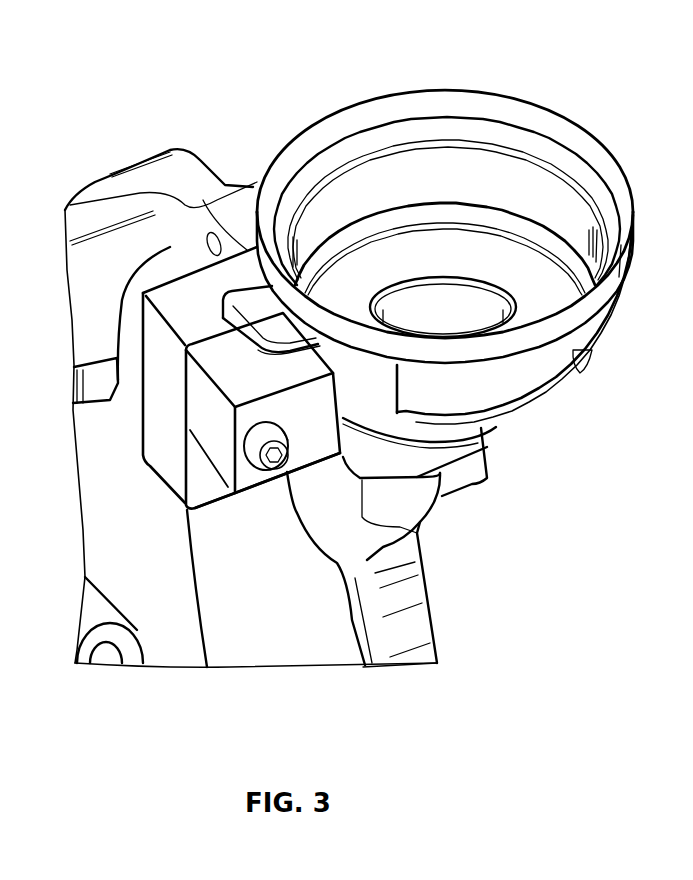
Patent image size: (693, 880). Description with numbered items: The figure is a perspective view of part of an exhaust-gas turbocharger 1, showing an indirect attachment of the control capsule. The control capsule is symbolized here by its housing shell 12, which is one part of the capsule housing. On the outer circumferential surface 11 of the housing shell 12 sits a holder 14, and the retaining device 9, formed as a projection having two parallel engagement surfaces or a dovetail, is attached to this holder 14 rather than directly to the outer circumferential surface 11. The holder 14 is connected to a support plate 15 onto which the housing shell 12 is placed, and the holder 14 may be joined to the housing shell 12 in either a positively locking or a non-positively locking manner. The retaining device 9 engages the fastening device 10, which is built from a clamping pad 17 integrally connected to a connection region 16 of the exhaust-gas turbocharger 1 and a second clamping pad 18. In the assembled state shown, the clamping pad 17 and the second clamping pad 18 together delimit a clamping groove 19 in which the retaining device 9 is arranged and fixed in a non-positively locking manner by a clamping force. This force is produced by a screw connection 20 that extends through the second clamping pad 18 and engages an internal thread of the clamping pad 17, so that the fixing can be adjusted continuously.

The exhaust-gas turbocharger 1 is at (203, 126).
The retaining device 9 is at (250, 288).
The fastening device 10 is at (272, 484).
The outer circumferential surface 11 is at (580, 373).
The housing shell 12 is at (609, 150).
The holder 14 is at (373, 400).
The support plate 15 is at (545, 398).
The connection region 16 is at (225, 197).
The clamping pad 17 is at (190, 293).
The second clamping pad 18 is at (230, 385).
The clamping groove 19 is at (283, 350).
The screw connection 20 is at (283, 462).